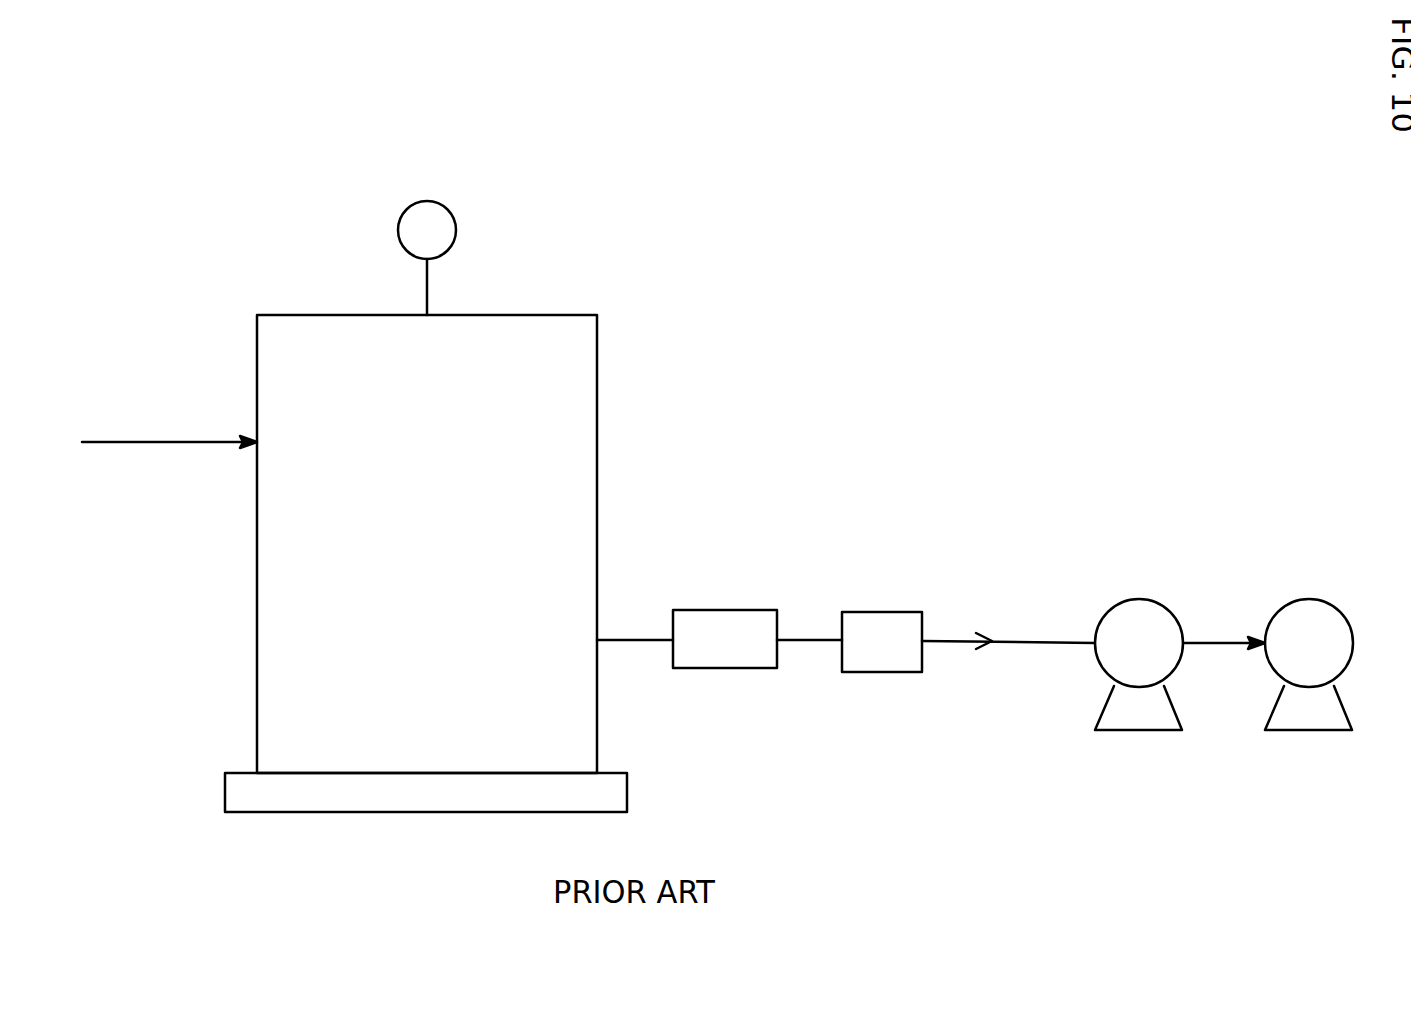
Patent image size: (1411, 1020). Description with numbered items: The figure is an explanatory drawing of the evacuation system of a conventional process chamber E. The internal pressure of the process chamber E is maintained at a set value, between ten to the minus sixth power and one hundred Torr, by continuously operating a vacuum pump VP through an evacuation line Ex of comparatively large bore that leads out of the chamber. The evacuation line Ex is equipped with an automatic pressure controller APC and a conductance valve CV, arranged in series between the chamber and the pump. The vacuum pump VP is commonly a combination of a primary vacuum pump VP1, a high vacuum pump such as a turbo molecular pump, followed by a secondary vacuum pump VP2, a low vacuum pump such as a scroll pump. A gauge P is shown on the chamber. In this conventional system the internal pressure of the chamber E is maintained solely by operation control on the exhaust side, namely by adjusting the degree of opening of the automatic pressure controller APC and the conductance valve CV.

The process chamber E is at (597, 415).
The pressure gauge P is at (427, 258).
The evacuation line Ex is at (813, 638).
The automatic pressure controller APC is at (725, 639).
The conductance valve CV is at (882, 642).
The vacuum pump VP is at (1224, 617).
The primary vacuum pump VP1 is at (1139, 664).
The secondary vacuum pump VP2 is at (1309, 664).